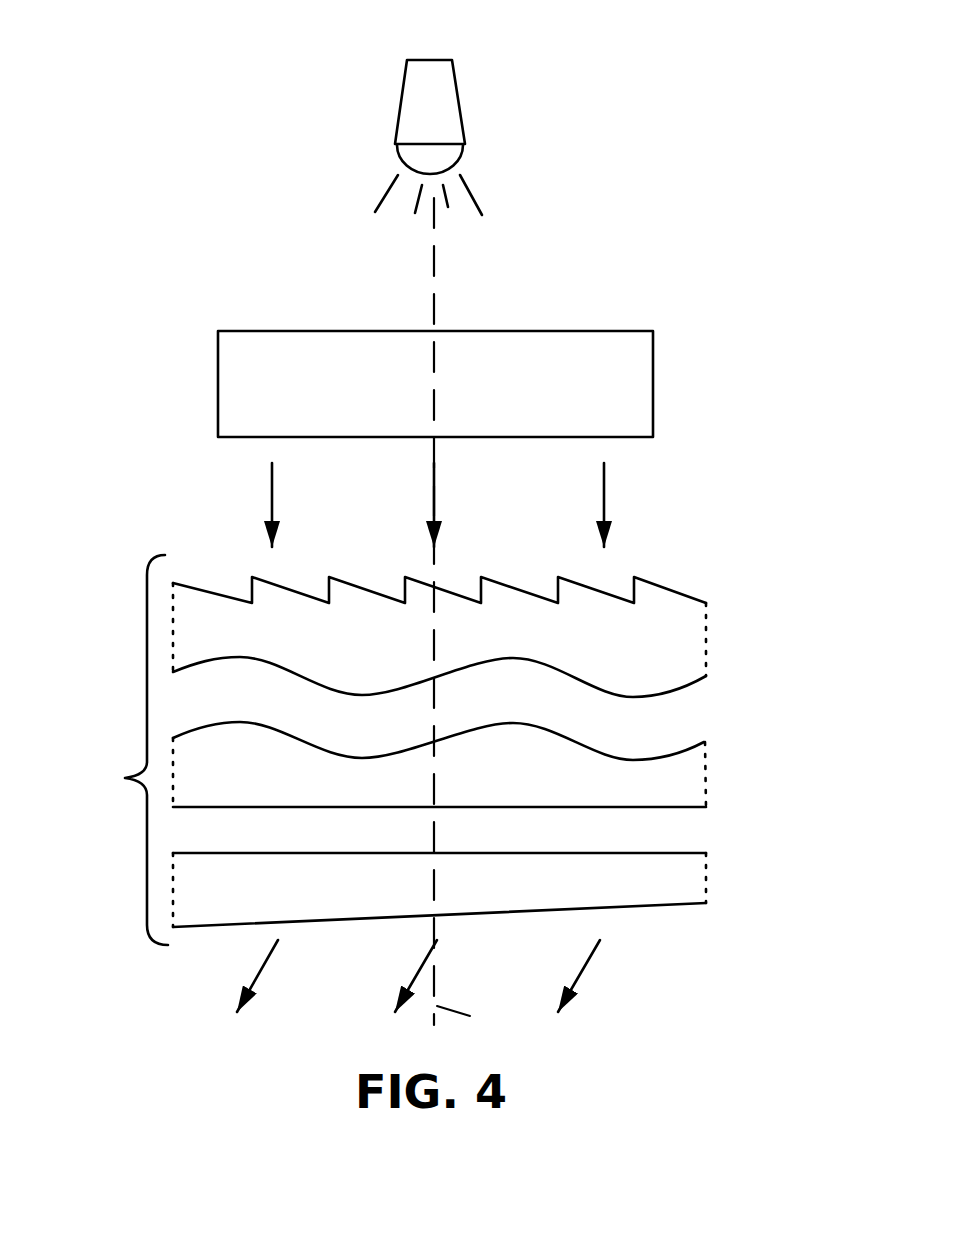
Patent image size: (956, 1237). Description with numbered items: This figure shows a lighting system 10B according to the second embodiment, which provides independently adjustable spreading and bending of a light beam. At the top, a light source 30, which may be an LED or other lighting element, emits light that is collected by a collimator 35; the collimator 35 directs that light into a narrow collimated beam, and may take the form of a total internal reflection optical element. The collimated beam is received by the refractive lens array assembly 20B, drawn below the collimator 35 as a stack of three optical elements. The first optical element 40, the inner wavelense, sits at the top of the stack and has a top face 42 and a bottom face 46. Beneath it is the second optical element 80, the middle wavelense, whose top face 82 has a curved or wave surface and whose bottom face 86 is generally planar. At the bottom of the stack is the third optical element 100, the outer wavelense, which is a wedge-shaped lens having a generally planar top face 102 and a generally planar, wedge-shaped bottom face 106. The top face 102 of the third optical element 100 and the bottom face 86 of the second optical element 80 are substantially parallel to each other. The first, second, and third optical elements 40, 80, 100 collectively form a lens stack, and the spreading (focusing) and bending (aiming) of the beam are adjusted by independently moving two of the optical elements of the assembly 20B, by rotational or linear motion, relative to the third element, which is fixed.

The lighting system 10B is at (167, 110).
The light source 30 is at (457, 90).
The collimator 35 is at (653, 380).
The refractive lens array assembly 20B is at (437, 779).
The first optical element 40 is at (672, 647).
The top face 42 is at (648, 592).
The bottom face 46 is at (200, 663).
The second optical element 80 is at (218, 752).
The top face 82 is at (660, 756).
The bottom face 86 is at (173, 807).
The third optical element 100 is at (673, 878).
The top face 102 is at (657, 853).
The bottom face 106 is at (213, 930).